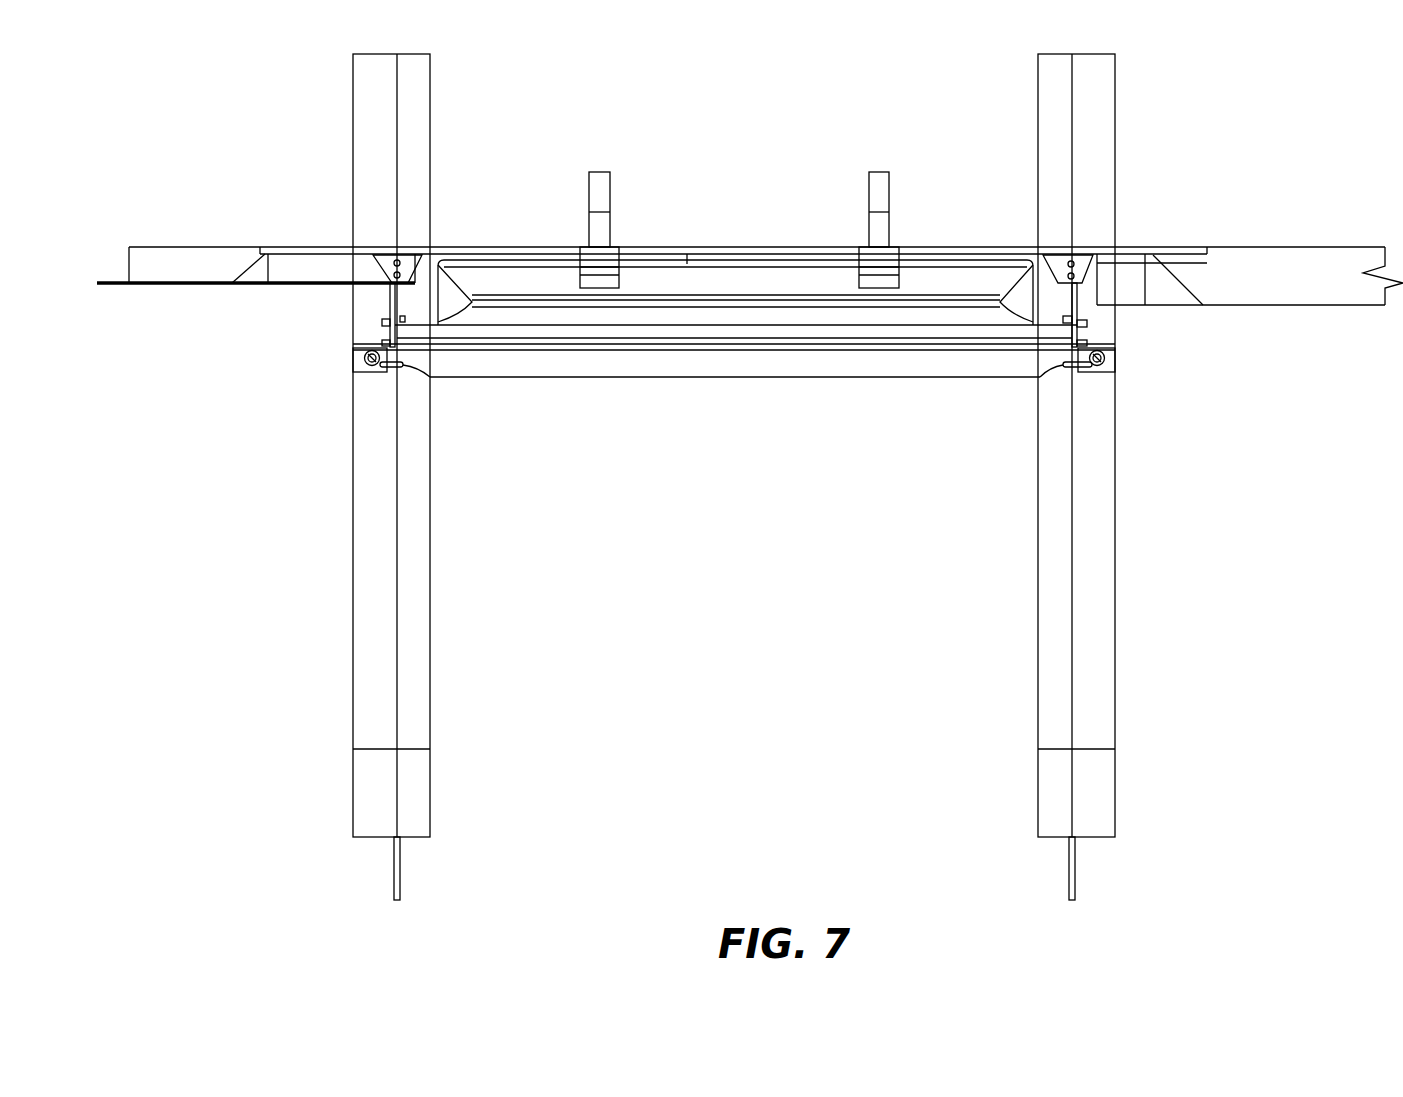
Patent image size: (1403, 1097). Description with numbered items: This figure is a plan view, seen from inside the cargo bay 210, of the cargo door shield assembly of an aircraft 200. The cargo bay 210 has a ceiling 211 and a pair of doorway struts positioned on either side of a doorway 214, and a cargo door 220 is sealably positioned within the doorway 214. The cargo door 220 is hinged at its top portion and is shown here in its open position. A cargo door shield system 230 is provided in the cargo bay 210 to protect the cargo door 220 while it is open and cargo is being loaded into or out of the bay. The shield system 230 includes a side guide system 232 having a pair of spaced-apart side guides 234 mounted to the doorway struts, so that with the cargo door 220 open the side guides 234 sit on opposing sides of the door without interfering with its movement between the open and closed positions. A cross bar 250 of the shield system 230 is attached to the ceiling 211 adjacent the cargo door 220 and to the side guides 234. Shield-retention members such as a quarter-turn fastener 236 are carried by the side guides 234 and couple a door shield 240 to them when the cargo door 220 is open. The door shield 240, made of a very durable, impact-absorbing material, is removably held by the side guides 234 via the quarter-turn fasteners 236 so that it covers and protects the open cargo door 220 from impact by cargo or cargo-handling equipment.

The aircraft 200 is at (190, 73).
The cargo bay 210 is at (272, 653).
The ceiling 211 is at (1262, 255).
The doorway 214 is at (473, 763).
The cargo door 220 is at (467, 275).
The cargo door shield system 230 is at (318, 222).
The side guide system 232 is at (300, 273).
The side guides 234 is at (385, 303).
The quarter-turn fastener 236 is at (367, 373).
The door shield 240 is at (540, 360).
The cross bar 250 is at (565, 243).